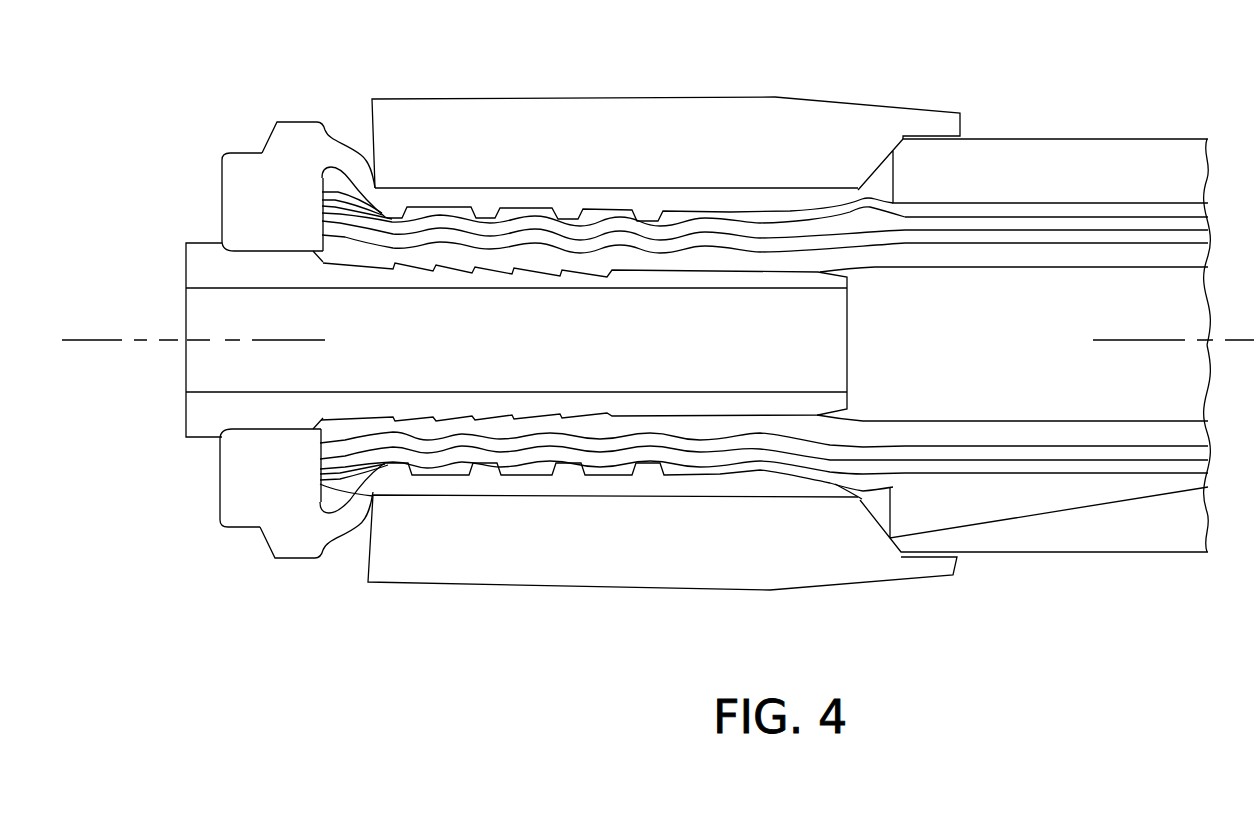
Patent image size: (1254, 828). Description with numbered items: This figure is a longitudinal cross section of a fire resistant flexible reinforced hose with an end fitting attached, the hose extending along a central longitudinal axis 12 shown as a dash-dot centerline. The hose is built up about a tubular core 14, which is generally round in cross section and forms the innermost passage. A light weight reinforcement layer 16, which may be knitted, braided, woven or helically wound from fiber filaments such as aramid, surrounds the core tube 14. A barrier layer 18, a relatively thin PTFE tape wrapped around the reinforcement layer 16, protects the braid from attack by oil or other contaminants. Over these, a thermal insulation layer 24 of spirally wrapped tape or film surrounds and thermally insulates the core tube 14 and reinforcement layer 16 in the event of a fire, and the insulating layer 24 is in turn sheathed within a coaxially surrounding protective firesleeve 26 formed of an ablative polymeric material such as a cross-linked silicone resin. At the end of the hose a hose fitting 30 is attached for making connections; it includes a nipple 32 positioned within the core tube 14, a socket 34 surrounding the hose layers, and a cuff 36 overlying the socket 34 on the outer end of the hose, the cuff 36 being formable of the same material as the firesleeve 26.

The central longitudinal axis 12 is at (134, 336).
The tubular core 14 is at (430, 256).
The reinforcement layer 16 is at (568, 245).
The barrier layer 18 is at (832, 226).
The thermal insulation layer 24 is at (1053, 212).
The firesleeve 26 is at (1082, 163).
The hose fitting 30 is at (232, 194).
The nipple 32 is at (302, 276).
The socket 34 is at (290, 165).
The cuff 36 is at (645, 120).